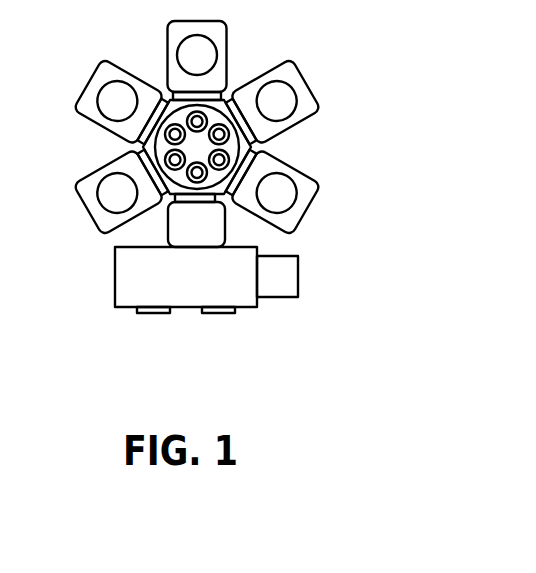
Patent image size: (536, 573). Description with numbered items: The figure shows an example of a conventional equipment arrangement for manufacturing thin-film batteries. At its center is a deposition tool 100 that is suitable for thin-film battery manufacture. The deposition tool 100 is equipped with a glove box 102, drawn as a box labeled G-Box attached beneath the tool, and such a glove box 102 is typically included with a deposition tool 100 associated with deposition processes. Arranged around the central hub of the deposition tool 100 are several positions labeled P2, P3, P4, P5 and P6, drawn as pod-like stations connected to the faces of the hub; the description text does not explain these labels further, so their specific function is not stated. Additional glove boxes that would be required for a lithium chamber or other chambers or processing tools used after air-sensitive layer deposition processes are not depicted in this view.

The deposition tool 100 is at (236, 156).
The glove box 102 is at (115, 278).
The pod P2 is at (285, 190).
The pod P3 is at (280, 103).
The pod P4 is at (197, 50).
The pod P5 is at (114, 103).
The pod P6 is at (110, 190).